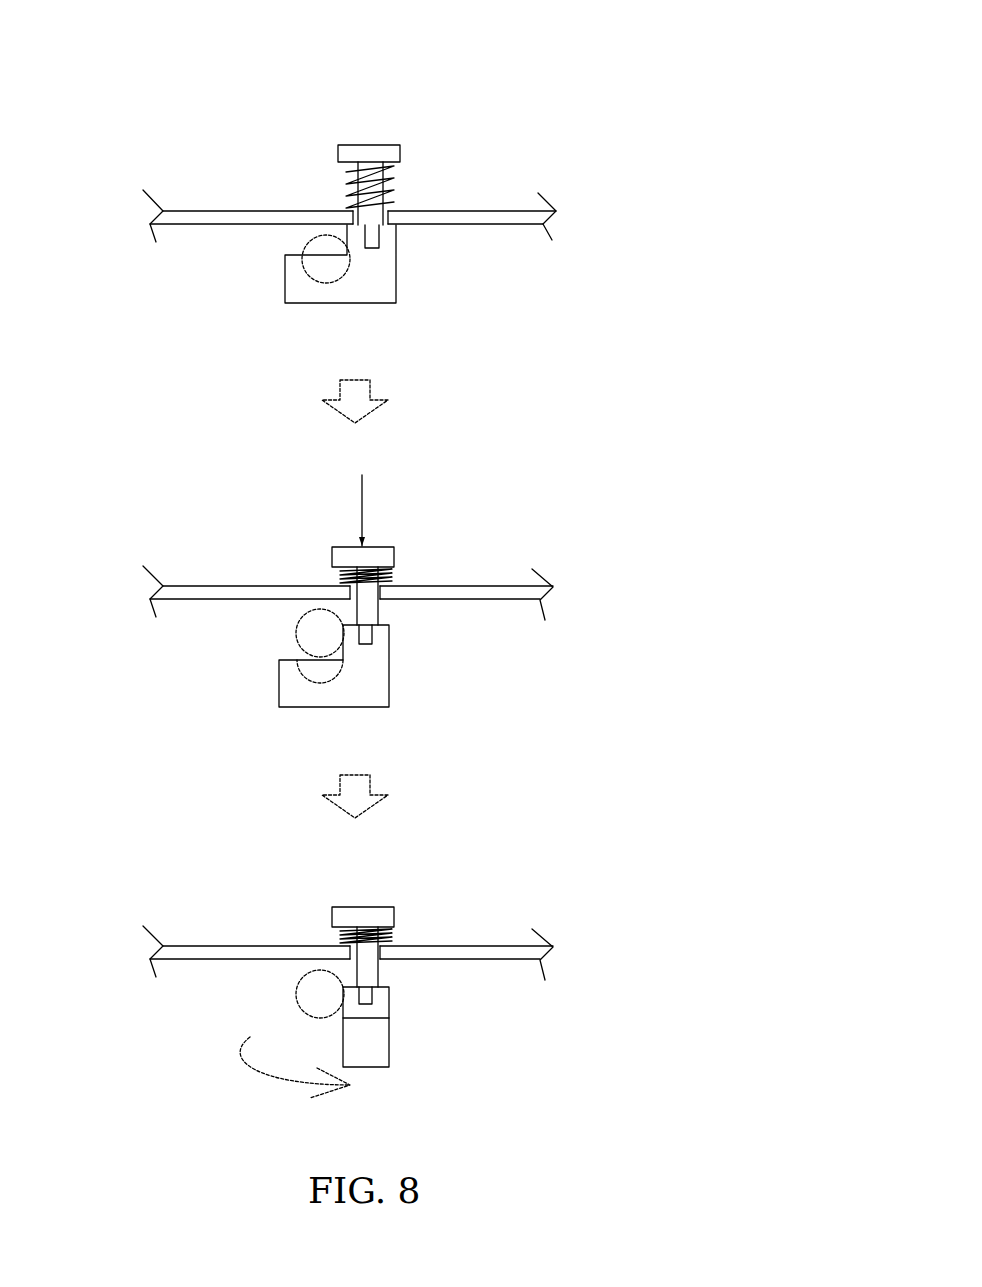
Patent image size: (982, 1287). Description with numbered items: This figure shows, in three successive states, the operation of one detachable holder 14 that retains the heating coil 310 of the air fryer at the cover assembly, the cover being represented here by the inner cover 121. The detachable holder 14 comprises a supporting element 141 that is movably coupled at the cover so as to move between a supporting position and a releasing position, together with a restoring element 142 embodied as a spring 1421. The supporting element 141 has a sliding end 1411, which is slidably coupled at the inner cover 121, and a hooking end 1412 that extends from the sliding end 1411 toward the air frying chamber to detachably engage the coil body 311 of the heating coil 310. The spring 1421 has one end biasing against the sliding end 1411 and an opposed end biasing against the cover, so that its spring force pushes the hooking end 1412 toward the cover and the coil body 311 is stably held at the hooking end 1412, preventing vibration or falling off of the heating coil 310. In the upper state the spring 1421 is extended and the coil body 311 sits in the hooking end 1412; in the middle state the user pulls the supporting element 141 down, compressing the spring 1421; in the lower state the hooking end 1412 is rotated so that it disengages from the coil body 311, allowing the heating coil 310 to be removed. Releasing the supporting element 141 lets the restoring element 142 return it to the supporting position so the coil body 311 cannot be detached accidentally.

The detachable holder 14 is at (402, 544).
The supporting element 141 is at (420, 563).
The sliding end 1411 is at (373, 155).
The hooking end 1412 is at (373, 283).
The restoring element 142 is at (286, 516).
The spring 1421 is at (350, 178).
The inner cover 121 is at (470, 218).
The heating coil 310 is at (208, 636).
The coil body 311 is at (320, 257).